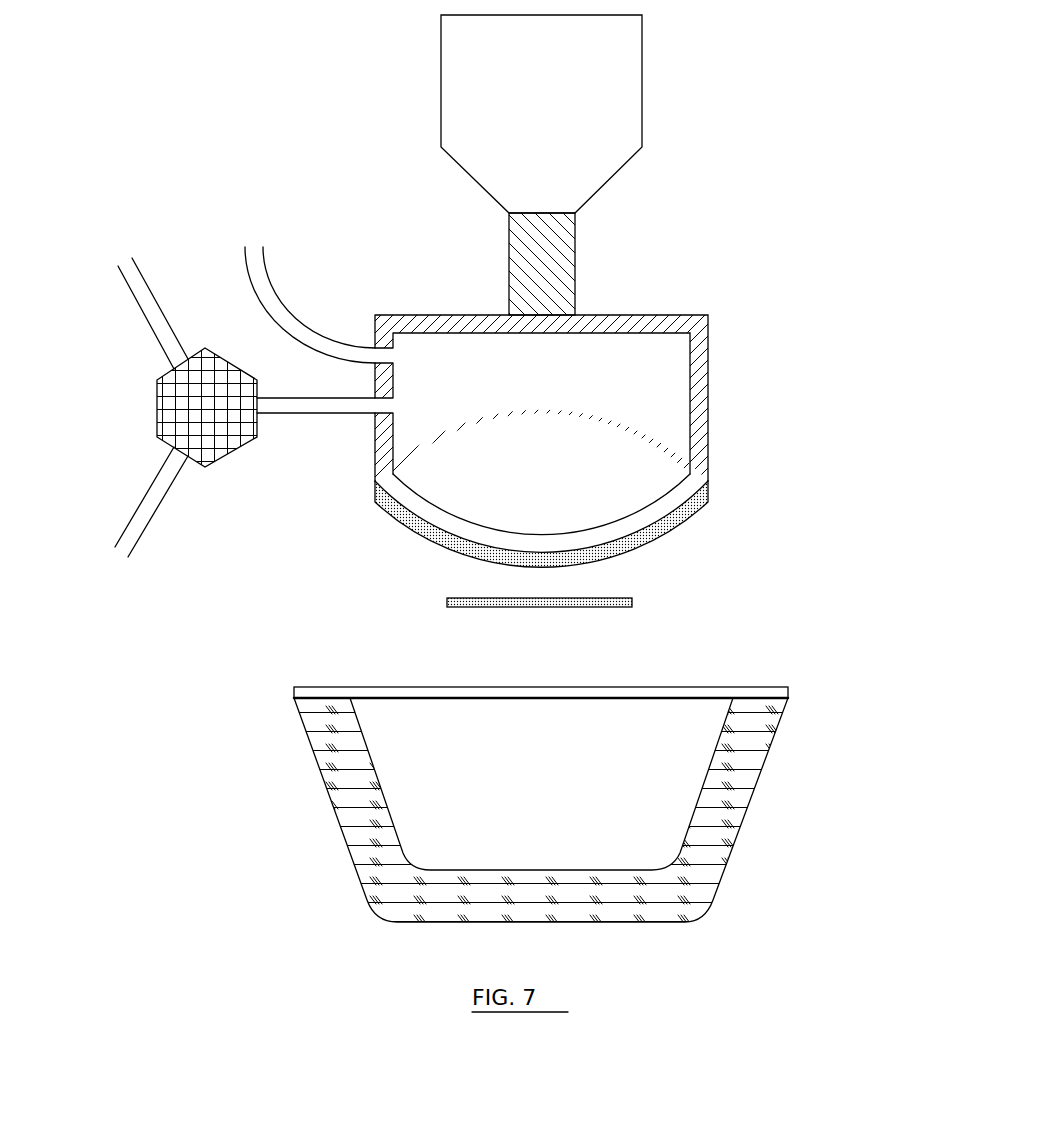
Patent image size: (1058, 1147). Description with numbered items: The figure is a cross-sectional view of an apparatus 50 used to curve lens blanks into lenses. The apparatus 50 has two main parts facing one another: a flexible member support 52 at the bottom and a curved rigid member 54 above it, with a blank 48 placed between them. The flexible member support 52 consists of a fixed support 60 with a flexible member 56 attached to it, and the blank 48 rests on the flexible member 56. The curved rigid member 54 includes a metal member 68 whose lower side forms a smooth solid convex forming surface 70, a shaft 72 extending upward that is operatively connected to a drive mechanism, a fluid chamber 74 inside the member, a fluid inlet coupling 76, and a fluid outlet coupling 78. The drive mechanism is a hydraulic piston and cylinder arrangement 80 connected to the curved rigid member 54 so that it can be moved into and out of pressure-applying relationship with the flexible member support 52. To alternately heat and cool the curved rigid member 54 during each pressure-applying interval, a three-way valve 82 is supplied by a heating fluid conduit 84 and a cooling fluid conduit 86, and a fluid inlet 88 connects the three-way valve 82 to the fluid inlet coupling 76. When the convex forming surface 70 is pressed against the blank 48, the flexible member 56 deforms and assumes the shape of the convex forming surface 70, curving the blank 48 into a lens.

The blank 48 is at (633, 602).
The apparatus 50 is at (250, 102).
The flexible member support 52 is at (268, 820).
The curved rigid member 54 is at (860, 374).
The flexible member 56 is at (780, 693).
The fixed support 60 is at (712, 882).
The metal member 68 is at (677, 512).
The convex forming surface 70 is at (397, 517).
The shaft 72 is at (567, 274).
The fluid chamber 74 is at (662, 392).
The fluid inlet coupling 76 is at (400, 410).
The fluid outlet coupling 78 is at (398, 356).
The hydraulic piston and cylinder arrangement 80 is at (620, 83).
The three-way valve 82 is at (157, 415).
The heating fluid conduit 84 is at (117, 530).
The cooling fluid conduit 86 is at (127, 285).
The fluid inlet 88 is at (310, 415).